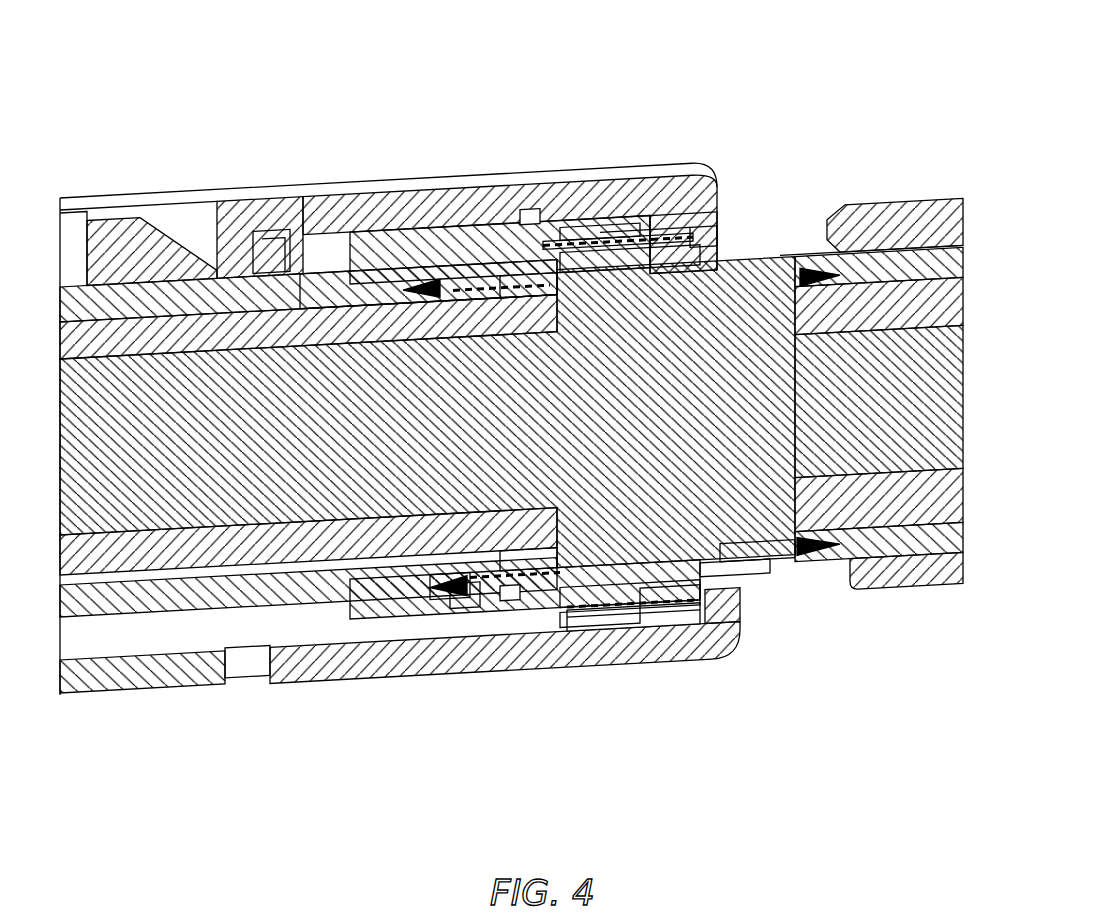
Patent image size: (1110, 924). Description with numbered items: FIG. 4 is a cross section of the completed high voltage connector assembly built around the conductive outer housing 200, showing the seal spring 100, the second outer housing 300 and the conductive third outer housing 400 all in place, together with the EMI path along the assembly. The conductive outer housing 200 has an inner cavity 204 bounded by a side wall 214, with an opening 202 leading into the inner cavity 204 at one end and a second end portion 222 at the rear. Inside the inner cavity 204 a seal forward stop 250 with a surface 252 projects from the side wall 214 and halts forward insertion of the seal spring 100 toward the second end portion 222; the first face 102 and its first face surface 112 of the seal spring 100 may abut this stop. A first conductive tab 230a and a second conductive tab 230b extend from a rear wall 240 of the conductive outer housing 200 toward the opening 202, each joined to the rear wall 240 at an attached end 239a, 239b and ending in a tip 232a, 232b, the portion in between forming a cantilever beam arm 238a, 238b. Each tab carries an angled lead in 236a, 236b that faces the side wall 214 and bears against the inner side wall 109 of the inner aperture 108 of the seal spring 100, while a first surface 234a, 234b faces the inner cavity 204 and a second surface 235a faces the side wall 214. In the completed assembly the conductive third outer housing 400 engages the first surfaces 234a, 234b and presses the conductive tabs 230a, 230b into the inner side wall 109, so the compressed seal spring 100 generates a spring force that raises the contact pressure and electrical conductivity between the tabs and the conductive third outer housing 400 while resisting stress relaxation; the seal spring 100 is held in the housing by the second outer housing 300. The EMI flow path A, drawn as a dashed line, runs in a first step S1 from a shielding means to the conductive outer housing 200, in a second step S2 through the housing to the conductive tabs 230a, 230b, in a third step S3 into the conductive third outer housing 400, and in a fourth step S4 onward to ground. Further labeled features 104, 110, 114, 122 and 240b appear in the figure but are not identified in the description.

The seal spring 100 is at (515, 230).
The first face 102 is at (545, 612).
The inner housing 104 is at (340, 265).
The inner aperture 108 is at (300, 262).
The inner side wall 109 is at (325, 268).
The insert 110 is at (472, 247).
The first face surface 112 is at (633, 680).
The inner housing portion 114 is at (428, 415).
The dielectric 122 is at (460, 605).
The conductive outer housing 200 is at (735, 185).
The opening 202 is at (318, 640).
The inner cavity 204 is at (423, 227).
The side wall 214 is at (440, 227).
The second end portion 222 is at (945, 240).
The first conductive tab 230a is at (675, 240).
The second conductive tab 230b is at (600, 605).
The tip 232a is at (460, 257).
The tip 232b is at (475, 612).
The first surface 234a is at (597, 247).
The first surface 234b is at (650, 600).
The second surface 235a is at (633, 240).
The angled lead in 236a is at (483, 245).
The angled lead in 236b is at (505, 610).
The cantilever beam arm 238a is at (693, 253).
The cantilever beam arm 238b is at (640, 605).
The attached end 239a is at (705, 255).
The attached end 239b is at (705, 610).
The rear wall 240 is at (760, 278).
The bore 240b is at (720, 600).
The seal forward stop 250 is at (532, 258).
The surface 252 is at (618, 124).
The second outer housing 300 is at (235, 237).
The conductive third outer housing 400 is at (148, 283).
The EMI flow path A is at (725, 285).
The Step 1 S1 is at (870, 555).
The Step 2 S2 is at (760, 572).
The Step 3 S3 is at (555, 595).
The Step 4 S4 is at (430, 590).